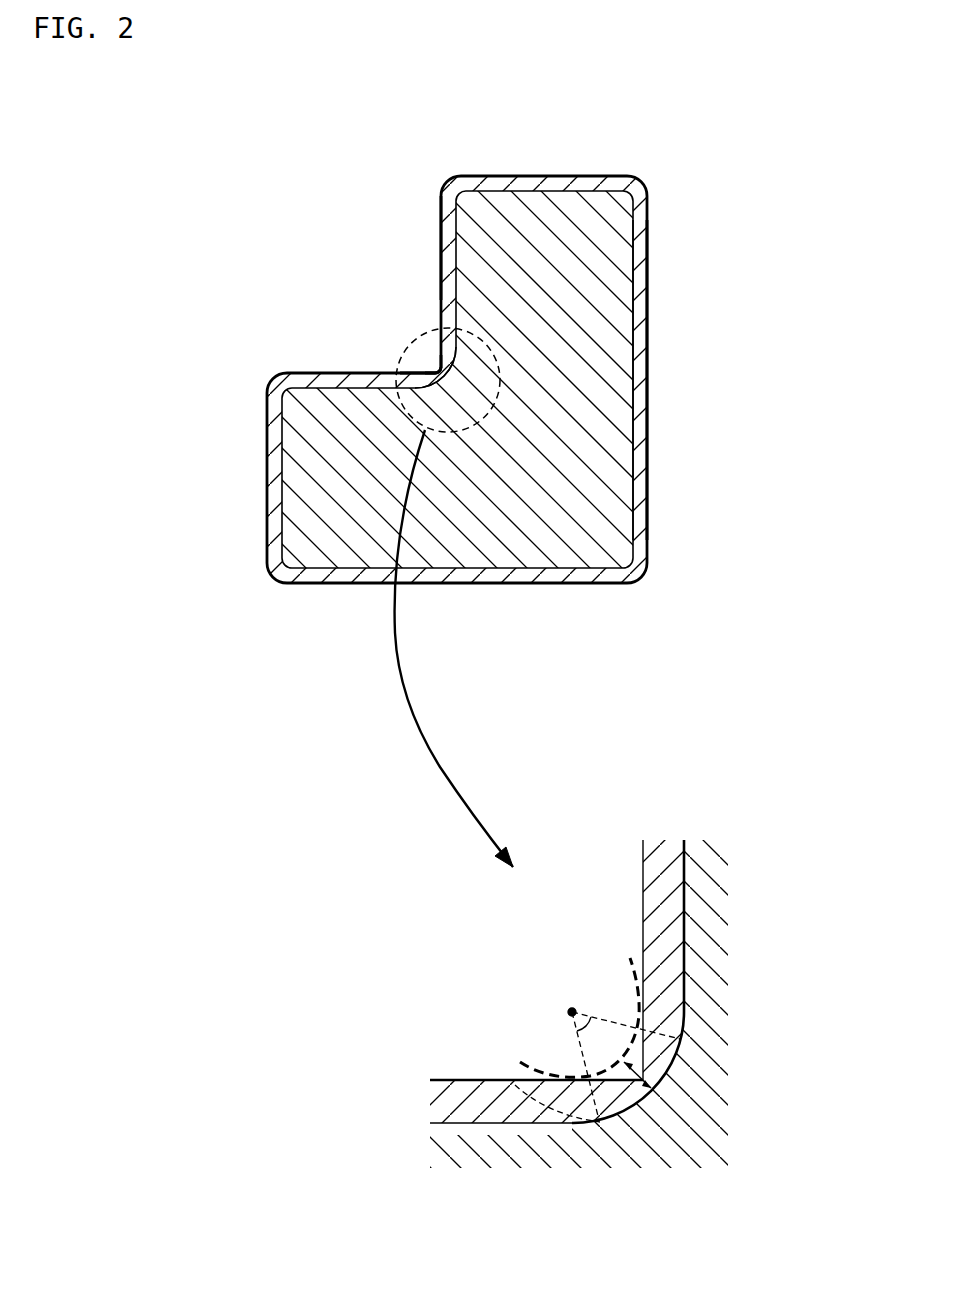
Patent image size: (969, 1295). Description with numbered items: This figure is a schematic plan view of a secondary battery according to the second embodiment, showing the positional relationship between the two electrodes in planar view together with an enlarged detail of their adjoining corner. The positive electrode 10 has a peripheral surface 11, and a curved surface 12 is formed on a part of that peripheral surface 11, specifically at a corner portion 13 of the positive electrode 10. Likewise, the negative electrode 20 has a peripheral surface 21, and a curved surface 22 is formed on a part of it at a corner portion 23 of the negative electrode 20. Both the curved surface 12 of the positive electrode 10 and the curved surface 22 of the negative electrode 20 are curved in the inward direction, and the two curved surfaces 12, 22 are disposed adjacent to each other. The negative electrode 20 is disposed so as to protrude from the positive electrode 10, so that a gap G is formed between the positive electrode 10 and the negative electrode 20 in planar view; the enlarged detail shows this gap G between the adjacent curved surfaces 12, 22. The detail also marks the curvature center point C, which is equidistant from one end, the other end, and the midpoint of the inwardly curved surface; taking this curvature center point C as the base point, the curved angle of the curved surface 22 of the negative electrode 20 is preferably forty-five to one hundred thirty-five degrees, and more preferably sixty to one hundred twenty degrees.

The positive electrode 10 is at (457, 249).
The peripheral surface 11 is at (633, 345).
The curved surface 12 is at (440, 384).
The corner portion 13 is at (440, 372).
The negative electrode 20 is at (503, 176).
The peripheral surface 21 is at (441, 205).
The curved surface 22 is at (439, 372).
The corner portion 23 is at (440, 372).
The gap G is at (651, 1089).
The curvature center point C is at (568, 1013).